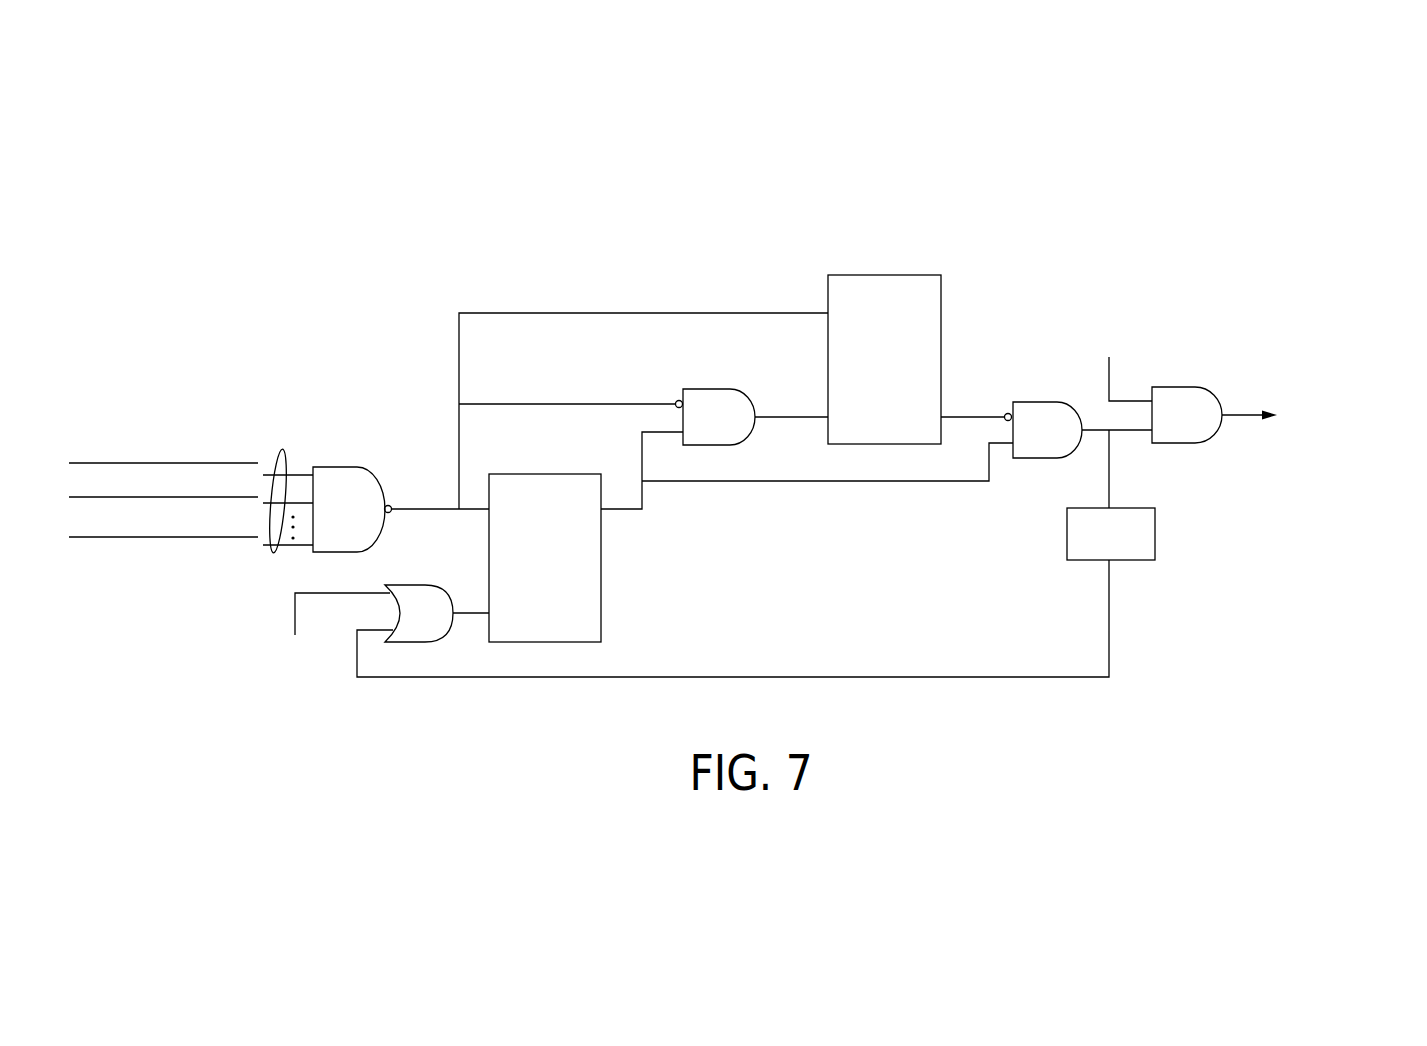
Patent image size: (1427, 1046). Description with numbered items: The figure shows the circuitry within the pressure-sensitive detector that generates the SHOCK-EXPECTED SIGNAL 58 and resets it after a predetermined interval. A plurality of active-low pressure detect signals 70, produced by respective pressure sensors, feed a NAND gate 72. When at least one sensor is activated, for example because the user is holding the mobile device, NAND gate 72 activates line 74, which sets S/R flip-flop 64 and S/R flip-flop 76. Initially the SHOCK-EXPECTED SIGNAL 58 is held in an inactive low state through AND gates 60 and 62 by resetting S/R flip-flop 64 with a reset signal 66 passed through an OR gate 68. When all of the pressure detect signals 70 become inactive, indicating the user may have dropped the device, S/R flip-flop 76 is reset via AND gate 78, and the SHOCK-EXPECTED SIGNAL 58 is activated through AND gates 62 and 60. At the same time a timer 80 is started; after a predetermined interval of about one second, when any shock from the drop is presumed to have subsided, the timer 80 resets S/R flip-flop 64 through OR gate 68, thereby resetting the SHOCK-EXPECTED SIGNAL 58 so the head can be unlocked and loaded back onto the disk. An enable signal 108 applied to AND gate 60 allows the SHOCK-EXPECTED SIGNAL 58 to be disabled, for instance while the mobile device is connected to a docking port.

The pressure detect signals 70 is at (280, 452).
The NAND gate 72 is at (337, 521).
The line 74 is at (405, 497).
The S/R flip-flop 64 is at (537, 571).
The reset signal 66 is at (295, 619).
The OR gate 68 is at (410, 624).
The S/R flip-flop 76 is at (878, 368).
The AND gate 78 is at (703, 428).
The AND gate 62 is at (1031, 441).
The enable signal 108 is at (1109, 372).
The AND gate 60 is at (1175, 428).
The SHOCK-EXPECTED SIGNAL 58 is at (1238, 410).
The timer 80 is at (1155, 530).